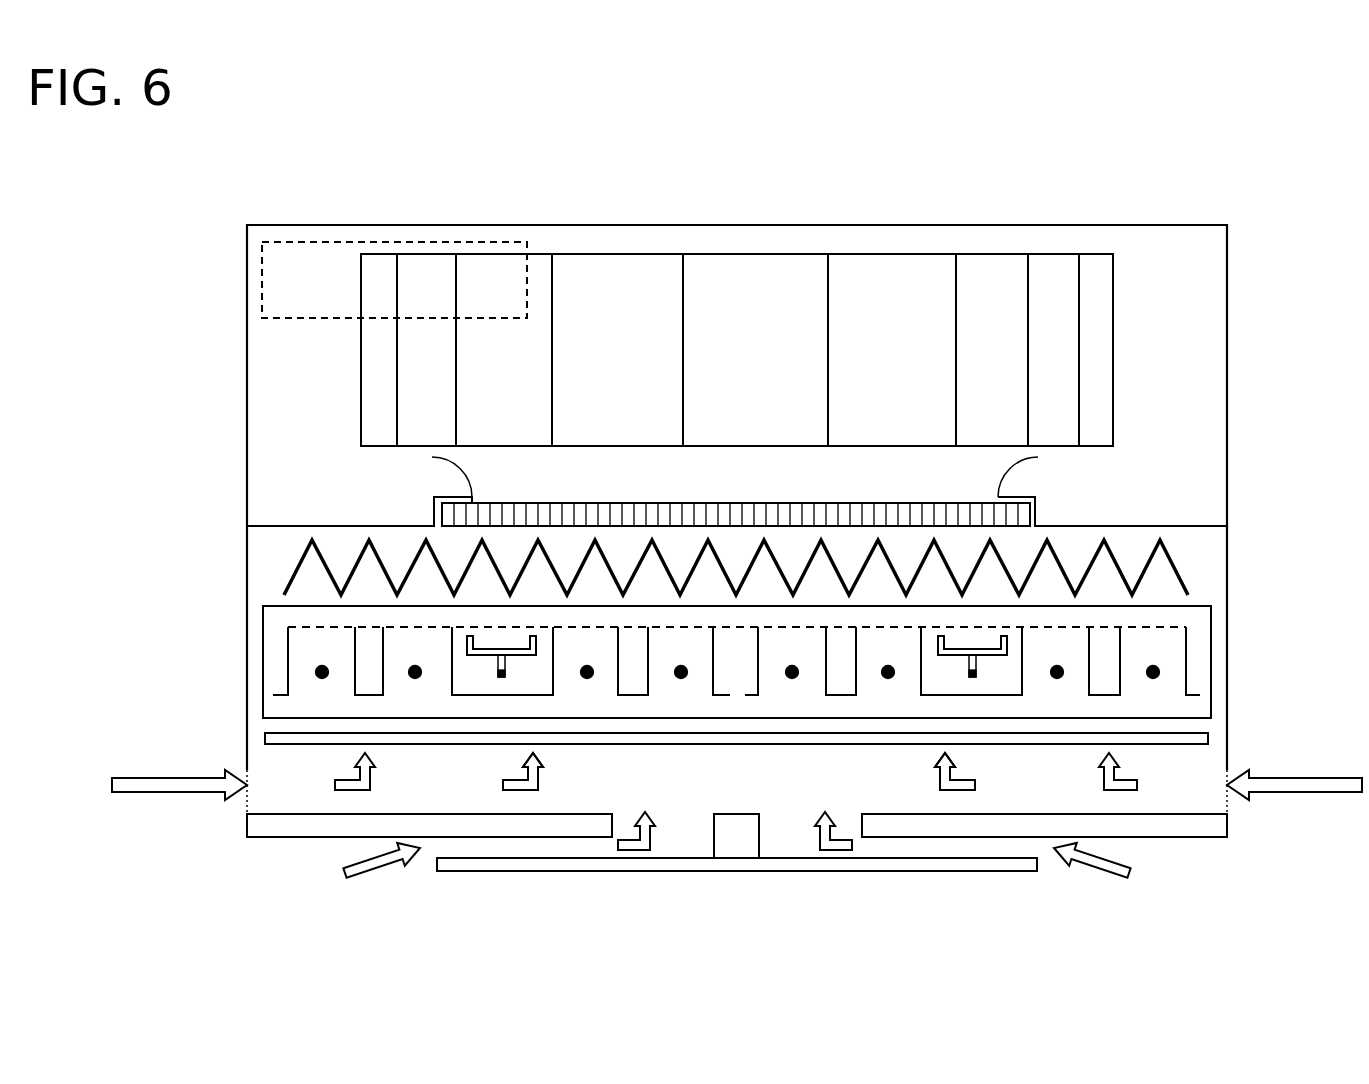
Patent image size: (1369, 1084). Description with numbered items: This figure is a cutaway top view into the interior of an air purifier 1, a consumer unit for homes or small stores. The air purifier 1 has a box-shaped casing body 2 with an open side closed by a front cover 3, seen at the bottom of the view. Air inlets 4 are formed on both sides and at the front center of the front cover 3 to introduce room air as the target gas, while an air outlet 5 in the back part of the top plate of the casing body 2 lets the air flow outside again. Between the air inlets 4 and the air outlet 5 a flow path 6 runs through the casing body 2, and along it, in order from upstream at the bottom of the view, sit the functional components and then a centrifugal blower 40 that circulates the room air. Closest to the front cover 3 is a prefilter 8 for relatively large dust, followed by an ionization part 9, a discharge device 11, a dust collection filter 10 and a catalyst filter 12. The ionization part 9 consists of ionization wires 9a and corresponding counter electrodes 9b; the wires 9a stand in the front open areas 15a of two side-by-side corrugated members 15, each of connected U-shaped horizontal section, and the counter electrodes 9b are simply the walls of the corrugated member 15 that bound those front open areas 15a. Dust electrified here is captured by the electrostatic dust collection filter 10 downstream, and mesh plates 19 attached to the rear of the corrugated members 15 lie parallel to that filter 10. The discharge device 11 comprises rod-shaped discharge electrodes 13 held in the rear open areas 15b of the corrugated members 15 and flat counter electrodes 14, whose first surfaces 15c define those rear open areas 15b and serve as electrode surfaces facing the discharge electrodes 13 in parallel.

The air purifier 1 is at (1318, 192).
The casing body 2 is at (1227, 296).
The front cover 3 is at (1198, 852).
The air inlets 4 is at (247, 800).
The air outlet 5 is at (262, 258).
The flow path 6 is at (260, 762).
The prefilter 8 is at (265, 737).
The ionization part 9 is at (308, 701).
The ionization wires 9a is at (316, 675).
The counter electrodes 9b is at (353, 650).
The dust collection filter 10 is at (1178, 570).
The discharge device 11 is at (497, 630).
The catalyst filter 12 is at (1035, 512).
The discharge electrodes 13 is at (500, 678).
The counter electrodes 14 is at (767, 770).
The corrugated member 15 is at (268, 662).
The front open areas 15a is at (333, 690).
The rear open areas 15b is at (525, 640).
The first surfaces 15c is at (512, 690).
The mesh plates 19 is at (328, 625).
The centrifugal blower 40 is at (1113, 296).